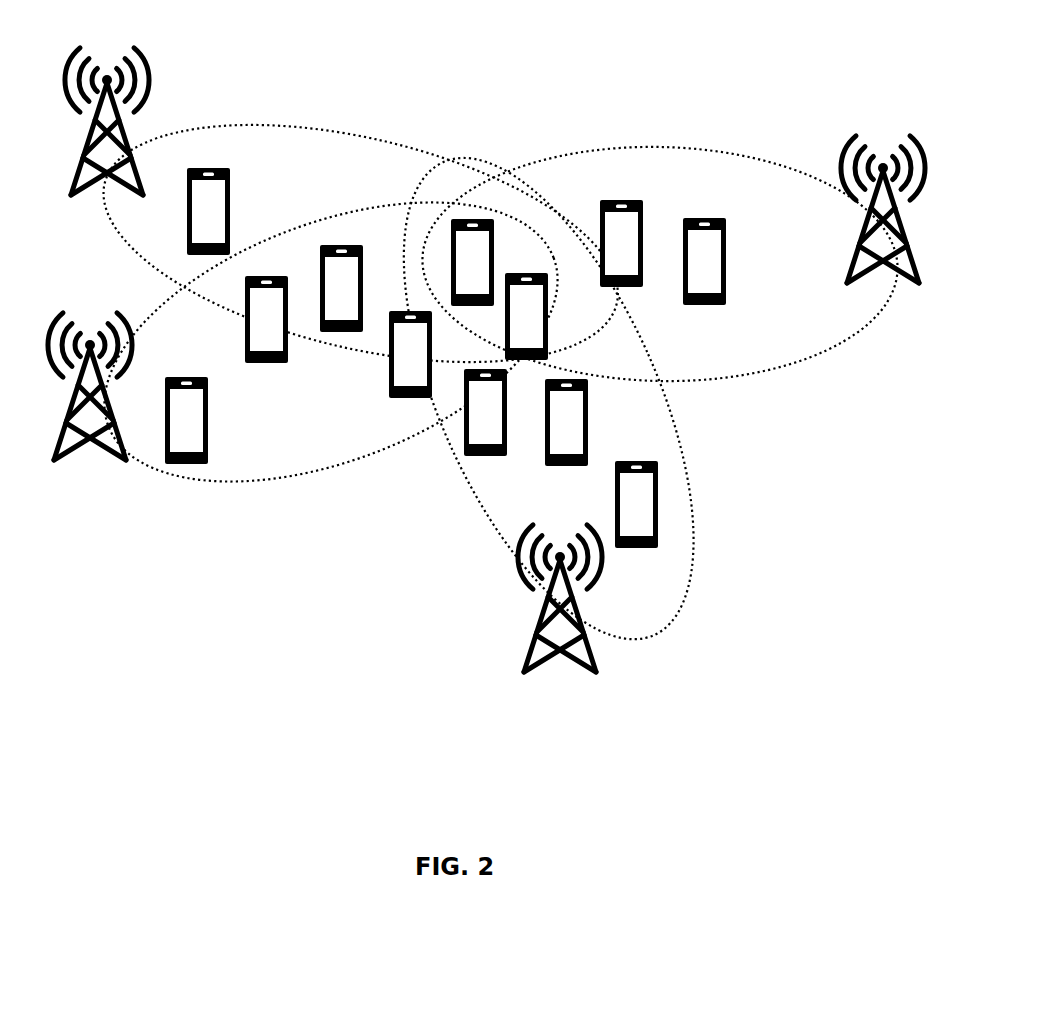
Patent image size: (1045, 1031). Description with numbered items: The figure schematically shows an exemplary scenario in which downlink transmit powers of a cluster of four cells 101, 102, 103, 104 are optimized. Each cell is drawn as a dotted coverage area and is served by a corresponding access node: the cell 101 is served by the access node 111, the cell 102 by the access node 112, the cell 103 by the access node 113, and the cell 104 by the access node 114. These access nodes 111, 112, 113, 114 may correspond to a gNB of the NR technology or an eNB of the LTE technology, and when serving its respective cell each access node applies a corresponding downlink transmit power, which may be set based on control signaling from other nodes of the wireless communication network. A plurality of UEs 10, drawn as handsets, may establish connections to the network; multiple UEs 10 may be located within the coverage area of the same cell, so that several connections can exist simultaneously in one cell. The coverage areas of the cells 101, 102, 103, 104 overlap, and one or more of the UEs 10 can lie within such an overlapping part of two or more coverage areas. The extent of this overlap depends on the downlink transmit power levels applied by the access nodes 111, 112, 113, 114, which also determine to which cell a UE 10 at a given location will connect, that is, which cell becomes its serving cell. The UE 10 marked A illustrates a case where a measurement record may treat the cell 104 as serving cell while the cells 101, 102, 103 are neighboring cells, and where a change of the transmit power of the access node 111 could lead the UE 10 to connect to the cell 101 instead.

The UE 10 is at (231, 194).
The cell 101 is at (350, 129).
The cell 102 is at (225, 482).
The cell 103 is at (770, 374).
The cell 104 is at (669, 628).
The access node 111 is at (74, 198).
The access node 112 is at (55, 460).
The access node 113 is at (918, 285).
The access node 114 is at (594, 675).